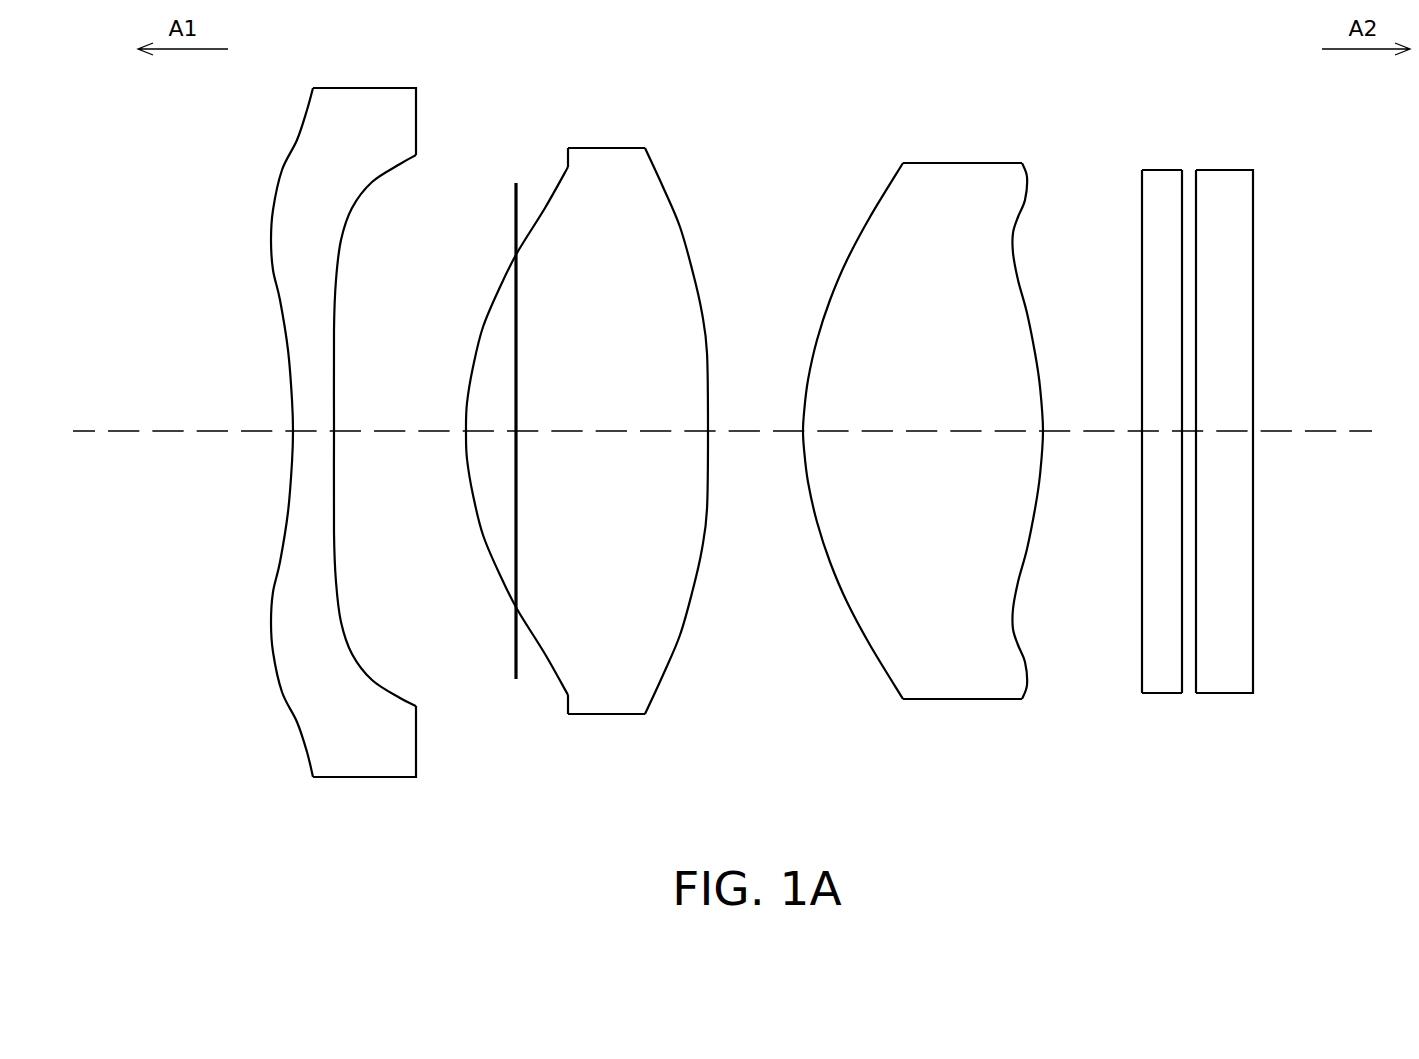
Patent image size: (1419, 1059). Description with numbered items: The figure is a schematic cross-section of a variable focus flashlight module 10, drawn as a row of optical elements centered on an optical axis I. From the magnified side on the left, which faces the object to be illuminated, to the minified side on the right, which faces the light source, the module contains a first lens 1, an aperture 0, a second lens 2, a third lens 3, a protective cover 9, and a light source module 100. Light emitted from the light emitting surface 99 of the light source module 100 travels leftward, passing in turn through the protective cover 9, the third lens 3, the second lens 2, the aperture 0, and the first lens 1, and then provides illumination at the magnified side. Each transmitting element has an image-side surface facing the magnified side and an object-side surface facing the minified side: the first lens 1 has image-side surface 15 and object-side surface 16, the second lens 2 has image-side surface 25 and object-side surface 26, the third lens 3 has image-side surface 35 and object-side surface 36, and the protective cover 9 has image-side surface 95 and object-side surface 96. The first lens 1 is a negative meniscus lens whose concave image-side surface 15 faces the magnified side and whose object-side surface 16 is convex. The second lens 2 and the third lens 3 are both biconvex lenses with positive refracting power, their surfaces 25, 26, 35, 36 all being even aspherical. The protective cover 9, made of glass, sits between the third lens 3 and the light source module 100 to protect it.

The optical axis I is at (160, 431).
The variable focus flashlight module 10 is at (1359, 702).
The first lens 1 is at (361, 105).
The image-side surface of the first lens 15 is at (273, 665).
The object-side surface of the first lens 16 is at (343, 637).
The aperture 0 is at (517, 193).
The second lens 2 is at (612, 183).
The image-side surface of the second lens 25 is at (497, 568).
The object-side surface of the second lens 26 is at (678, 648).
The third lens 3 is at (962, 183).
The image-side surface of the third lens 35 is at (870, 648).
The object-side surface of the third lens 36 is at (1015, 643).
The protective cover 9 is at (1165, 183).
The image-side surface of the protective cover 95 is at (1142, 635).
The object-side surface of the protective cover 96 is at (1182, 642).
The light source module 100 is at (1230, 260).
The light emitting surface 99 is at (1210, 537).